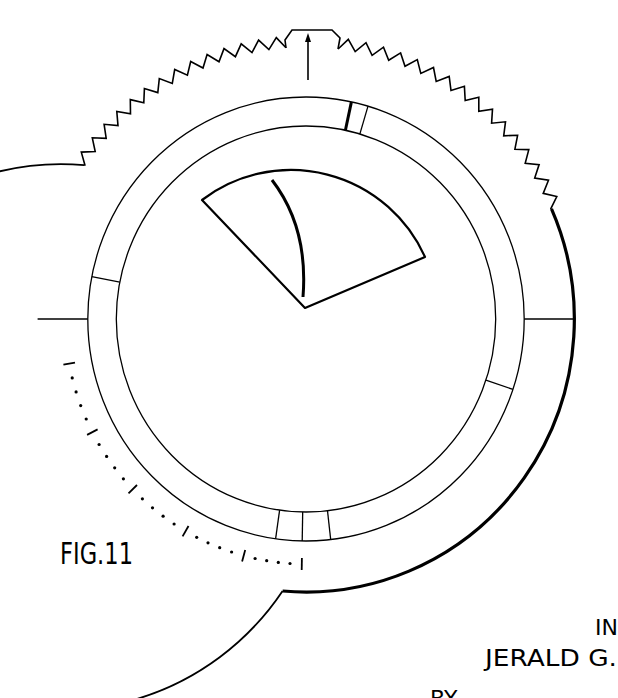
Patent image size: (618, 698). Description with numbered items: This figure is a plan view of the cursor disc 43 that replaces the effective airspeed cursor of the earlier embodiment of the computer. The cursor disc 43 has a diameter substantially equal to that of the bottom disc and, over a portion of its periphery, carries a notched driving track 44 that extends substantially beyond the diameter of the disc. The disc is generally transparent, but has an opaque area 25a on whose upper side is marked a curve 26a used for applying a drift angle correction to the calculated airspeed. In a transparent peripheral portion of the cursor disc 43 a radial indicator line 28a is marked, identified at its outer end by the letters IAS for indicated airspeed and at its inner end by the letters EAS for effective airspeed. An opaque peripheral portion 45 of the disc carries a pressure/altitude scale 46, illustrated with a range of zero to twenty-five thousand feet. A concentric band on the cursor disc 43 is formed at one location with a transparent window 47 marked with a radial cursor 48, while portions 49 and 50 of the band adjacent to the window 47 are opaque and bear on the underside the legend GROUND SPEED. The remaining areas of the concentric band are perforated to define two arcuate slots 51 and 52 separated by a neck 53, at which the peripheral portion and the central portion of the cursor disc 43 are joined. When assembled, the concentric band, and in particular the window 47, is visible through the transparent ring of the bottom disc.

The cursor disc 43 is at (67, 191).
The notched driving track 44 is at (207, 53).
The opaque peripheral portion 45 is at (365, 558).
The pressure/altitude scale 46 is at (247, 553).
The transparent window 47 is at (280, 518).
The radial cursor 48 is at (307, 520).
The opaque portion of concentric band 49 is at (200, 498).
The opaque portion of concentric band 50 is at (385, 493).
The arcuate slot 51 is at (243, 116).
The arcuate slot 52 is at (469, 180).
The neck 53 is at (358, 116).
The opaque area 25a is at (368, 275).
The curve 26a is at (298, 233).
The radial indicator line 28a is at (310, 62).